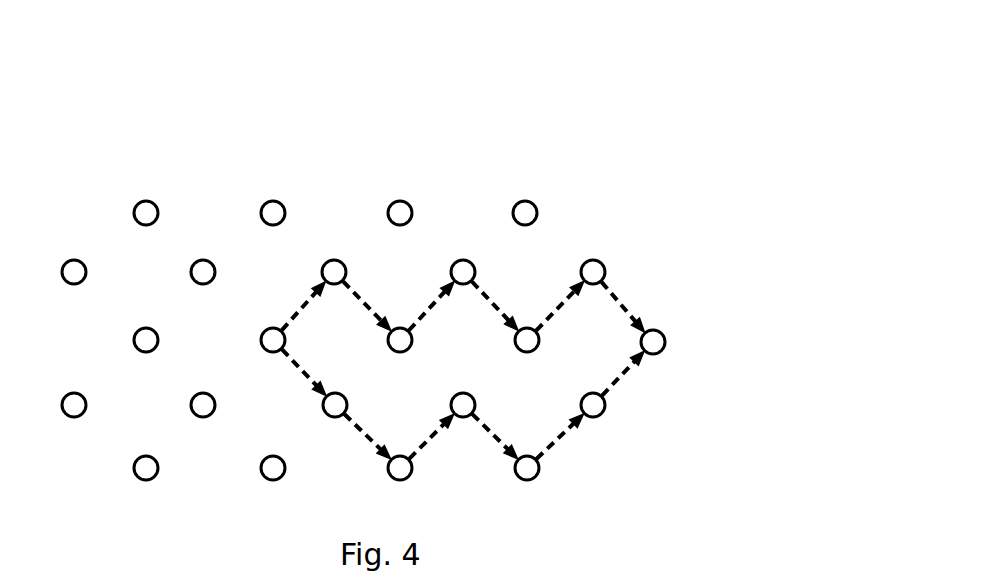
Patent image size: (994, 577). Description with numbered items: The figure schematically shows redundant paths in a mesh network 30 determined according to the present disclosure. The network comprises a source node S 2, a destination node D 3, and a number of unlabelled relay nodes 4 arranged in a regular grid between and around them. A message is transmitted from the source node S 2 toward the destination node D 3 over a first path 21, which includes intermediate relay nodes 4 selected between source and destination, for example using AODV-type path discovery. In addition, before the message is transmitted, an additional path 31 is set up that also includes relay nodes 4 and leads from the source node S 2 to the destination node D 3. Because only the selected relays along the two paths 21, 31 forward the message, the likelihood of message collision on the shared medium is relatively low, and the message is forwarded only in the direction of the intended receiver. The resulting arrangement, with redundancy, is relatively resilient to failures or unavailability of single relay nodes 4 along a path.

The network 30 is at (592, 106).
The relay nodes 4 is at (333, 253).
The source node S 2 is at (285, 340).
The destination node D 3 is at (663, 327).
The path 21 is at (493, 297).
The additional path 31 is at (368, 428).